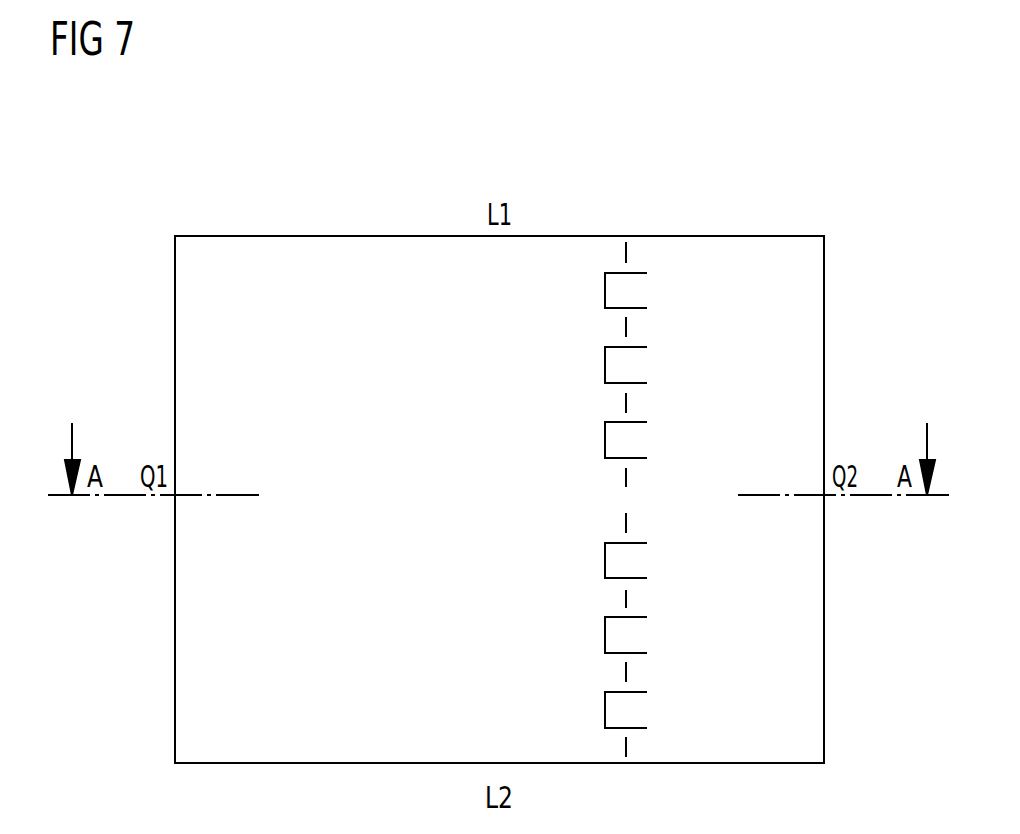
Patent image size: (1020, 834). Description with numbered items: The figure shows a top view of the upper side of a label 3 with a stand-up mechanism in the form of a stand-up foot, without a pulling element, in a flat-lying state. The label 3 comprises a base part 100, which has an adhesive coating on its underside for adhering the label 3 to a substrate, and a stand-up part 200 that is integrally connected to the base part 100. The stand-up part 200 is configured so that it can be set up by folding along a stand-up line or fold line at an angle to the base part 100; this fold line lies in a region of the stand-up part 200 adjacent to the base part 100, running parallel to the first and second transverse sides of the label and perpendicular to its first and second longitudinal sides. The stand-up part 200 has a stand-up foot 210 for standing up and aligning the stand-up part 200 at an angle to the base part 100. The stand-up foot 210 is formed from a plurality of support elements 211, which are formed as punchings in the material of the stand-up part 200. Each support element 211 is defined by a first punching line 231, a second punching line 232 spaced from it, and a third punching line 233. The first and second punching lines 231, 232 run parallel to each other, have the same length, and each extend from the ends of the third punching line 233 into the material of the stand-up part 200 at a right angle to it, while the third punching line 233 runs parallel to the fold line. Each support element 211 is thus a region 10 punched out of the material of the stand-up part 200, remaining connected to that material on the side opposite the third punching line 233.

The label 3 is at (820, 143).
The base part 100 is at (335, 250).
The stand-up part 200 is at (697, 250).
The region punched out of the material of the stand-up part 10 is at (670, 718).
The stand-up foot 210 is at (670, 718).
The support element 211 is at (637, 712).
The first punching line 231 is at (637, 692).
The second punching line 232 is at (615, 728).
The third punching line 233 is at (603, 708).